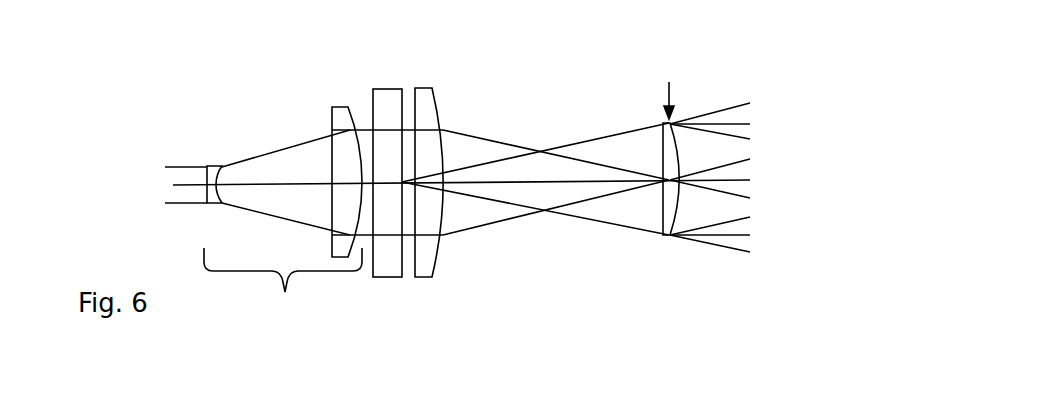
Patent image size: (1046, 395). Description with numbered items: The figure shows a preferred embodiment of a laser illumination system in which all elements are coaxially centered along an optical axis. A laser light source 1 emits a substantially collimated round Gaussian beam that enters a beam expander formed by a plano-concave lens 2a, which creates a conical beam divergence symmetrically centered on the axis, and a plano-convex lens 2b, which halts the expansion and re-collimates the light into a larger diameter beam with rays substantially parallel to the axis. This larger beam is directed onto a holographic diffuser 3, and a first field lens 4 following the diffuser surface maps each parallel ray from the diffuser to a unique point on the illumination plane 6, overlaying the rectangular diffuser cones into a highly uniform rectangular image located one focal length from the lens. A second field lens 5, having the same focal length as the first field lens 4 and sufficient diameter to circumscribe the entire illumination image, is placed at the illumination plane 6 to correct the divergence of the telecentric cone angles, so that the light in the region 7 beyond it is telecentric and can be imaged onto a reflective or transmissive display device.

The laser light source 1 is at (132, 188).
The plano-concave lens 2a is at (276, 185).
The plano-convex lens 2b is at (373, 184).
The holographic diffuser 3 is at (388, 109).
The first field lens 4 is at (523, 198).
The second field lens 5 is at (618, 196).
The illumination plane 6 is at (653, 64).
The plane of telecentric light 7 is at (778, 179).